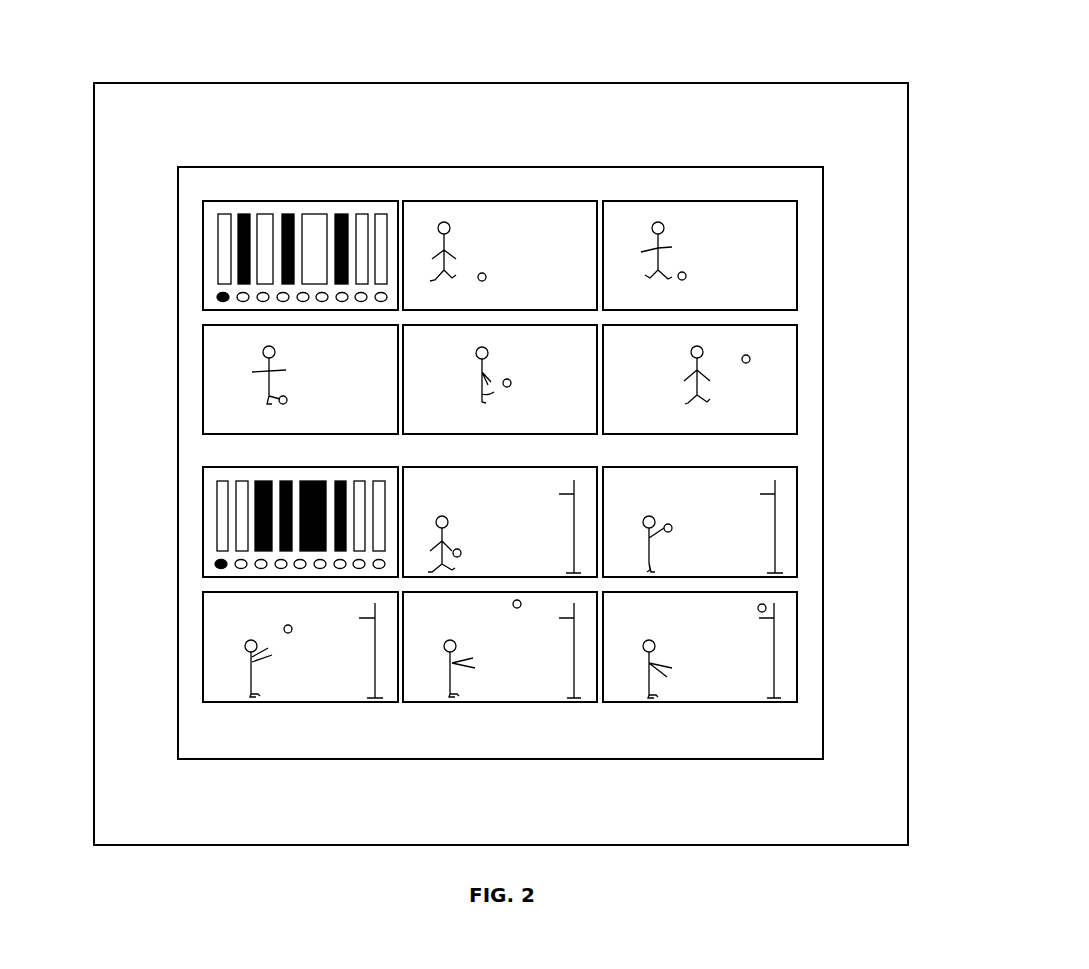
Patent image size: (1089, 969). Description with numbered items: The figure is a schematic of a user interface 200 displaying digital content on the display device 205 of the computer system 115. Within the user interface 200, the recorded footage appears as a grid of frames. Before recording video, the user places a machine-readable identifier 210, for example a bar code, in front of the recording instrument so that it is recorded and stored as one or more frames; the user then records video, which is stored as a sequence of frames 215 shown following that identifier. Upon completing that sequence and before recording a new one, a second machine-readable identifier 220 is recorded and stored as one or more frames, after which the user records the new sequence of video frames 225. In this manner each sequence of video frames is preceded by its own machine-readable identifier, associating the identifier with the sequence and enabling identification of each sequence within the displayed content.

The computer system 115 is at (940, 80).
The display device 205 is at (908, 167).
The user interface 200 is at (823, 346).
The machine-readable identifier 210 is at (203, 255).
The sequence of frames 215 is at (797, 405).
The second machine-readable identifier 220 is at (203, 523).
The new sequence of video frames 225 is at (797, 672).